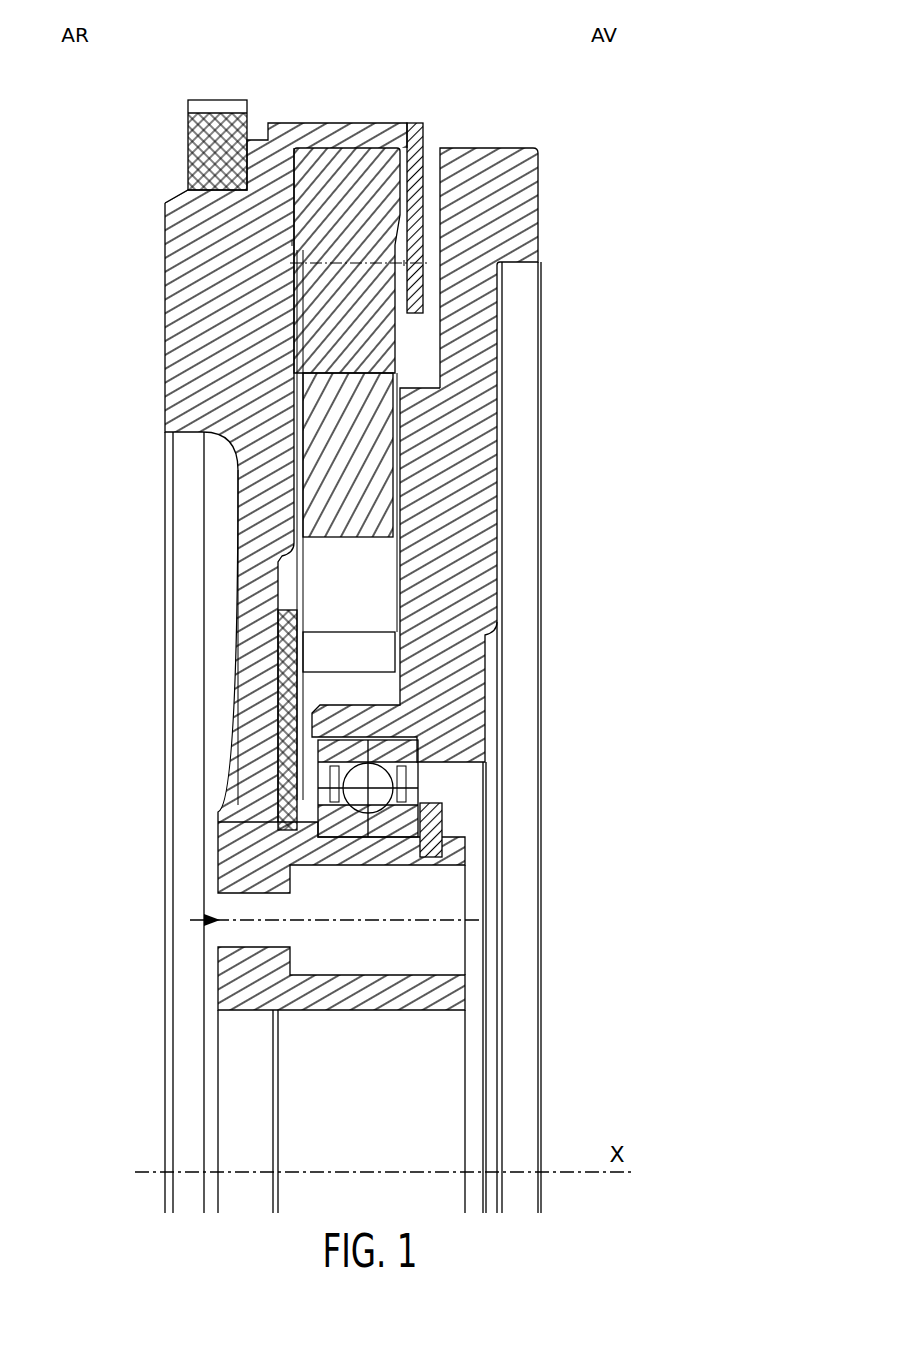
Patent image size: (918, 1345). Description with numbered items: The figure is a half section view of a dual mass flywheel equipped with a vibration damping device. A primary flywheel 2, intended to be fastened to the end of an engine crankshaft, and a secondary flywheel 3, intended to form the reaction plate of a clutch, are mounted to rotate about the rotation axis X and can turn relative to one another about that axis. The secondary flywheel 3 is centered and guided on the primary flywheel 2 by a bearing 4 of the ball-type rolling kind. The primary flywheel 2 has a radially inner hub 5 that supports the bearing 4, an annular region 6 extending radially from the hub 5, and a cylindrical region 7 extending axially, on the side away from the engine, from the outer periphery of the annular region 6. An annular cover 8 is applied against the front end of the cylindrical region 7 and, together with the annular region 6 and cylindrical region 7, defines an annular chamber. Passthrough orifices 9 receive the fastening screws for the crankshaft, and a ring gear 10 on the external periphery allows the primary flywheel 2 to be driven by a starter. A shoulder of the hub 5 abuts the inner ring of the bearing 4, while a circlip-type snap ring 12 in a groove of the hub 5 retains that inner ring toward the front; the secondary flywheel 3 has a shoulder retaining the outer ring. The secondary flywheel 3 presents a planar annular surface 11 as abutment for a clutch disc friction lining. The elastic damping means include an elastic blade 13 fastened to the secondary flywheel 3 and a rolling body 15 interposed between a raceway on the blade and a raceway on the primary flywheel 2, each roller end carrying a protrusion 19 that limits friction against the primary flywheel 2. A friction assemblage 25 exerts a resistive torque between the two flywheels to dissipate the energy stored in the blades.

The primary flywheel 2 is at (180, 380).
The secondary flywheel 3 is at (487, 380).
The bearing 4 is at (417, 778).
The radially inner hub 5 is at (393, 865).
The annular region 6 is at (240, 660).
The cylindrical region 7 is at (372, 133).
The annular cover 8 is at (423, 147).
The passthrough orifices 9 is at (210, 922).
The ring gear 10 is at (193, 116).
The planar annular surface 11 is at (490, 577).
The snap ring 12 is at (442, 820).
The elastic blade 13 is at (322, 458).
The rolling body 15 is at (293, 273).
The protrusion 19 is at (292, 243).
The friction assemblage 25 is at (278, 630).